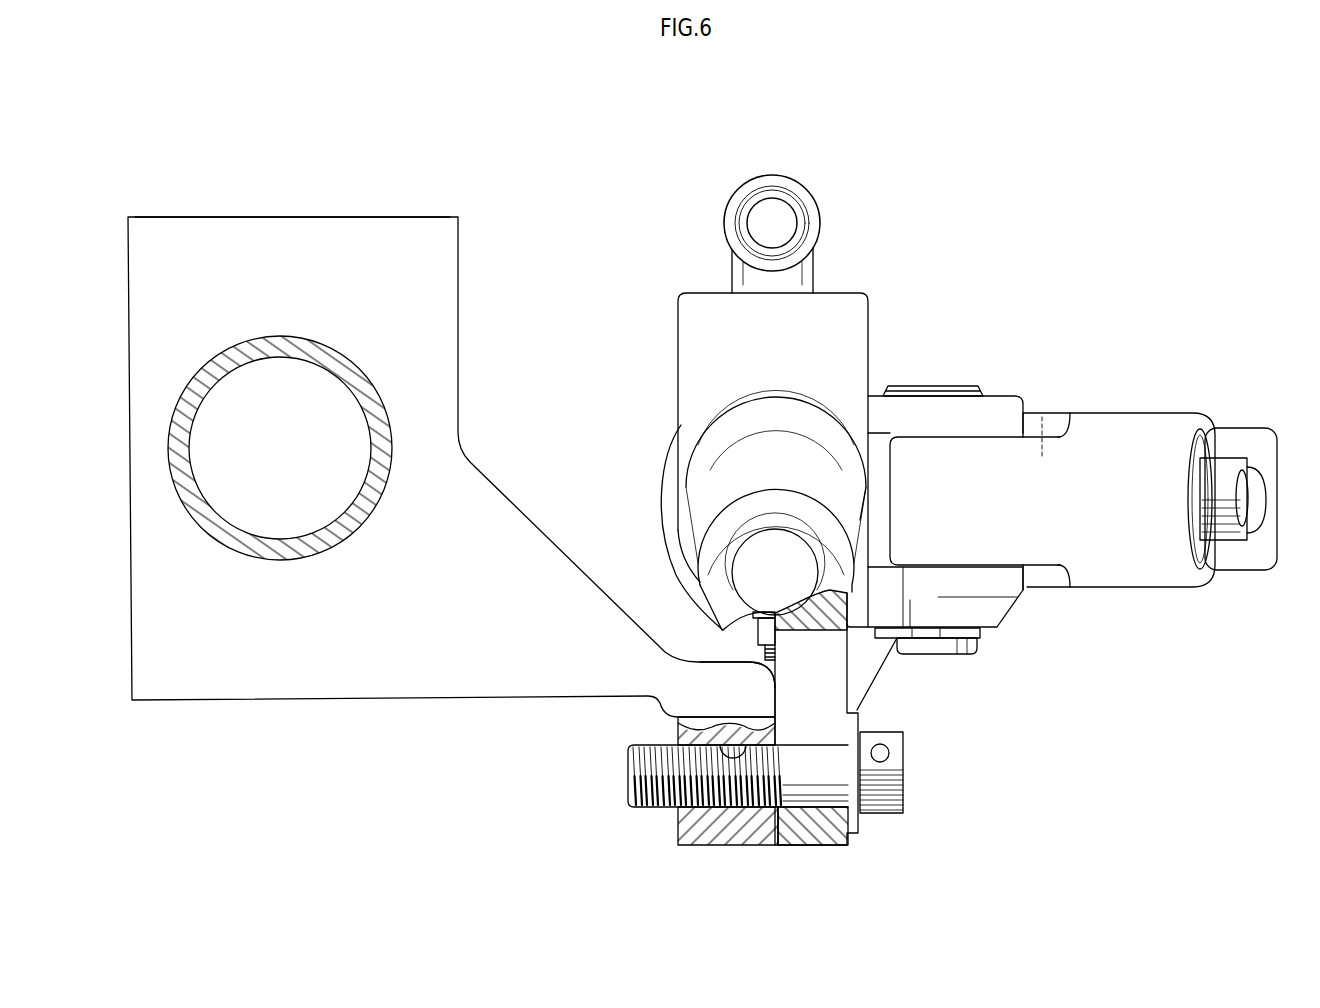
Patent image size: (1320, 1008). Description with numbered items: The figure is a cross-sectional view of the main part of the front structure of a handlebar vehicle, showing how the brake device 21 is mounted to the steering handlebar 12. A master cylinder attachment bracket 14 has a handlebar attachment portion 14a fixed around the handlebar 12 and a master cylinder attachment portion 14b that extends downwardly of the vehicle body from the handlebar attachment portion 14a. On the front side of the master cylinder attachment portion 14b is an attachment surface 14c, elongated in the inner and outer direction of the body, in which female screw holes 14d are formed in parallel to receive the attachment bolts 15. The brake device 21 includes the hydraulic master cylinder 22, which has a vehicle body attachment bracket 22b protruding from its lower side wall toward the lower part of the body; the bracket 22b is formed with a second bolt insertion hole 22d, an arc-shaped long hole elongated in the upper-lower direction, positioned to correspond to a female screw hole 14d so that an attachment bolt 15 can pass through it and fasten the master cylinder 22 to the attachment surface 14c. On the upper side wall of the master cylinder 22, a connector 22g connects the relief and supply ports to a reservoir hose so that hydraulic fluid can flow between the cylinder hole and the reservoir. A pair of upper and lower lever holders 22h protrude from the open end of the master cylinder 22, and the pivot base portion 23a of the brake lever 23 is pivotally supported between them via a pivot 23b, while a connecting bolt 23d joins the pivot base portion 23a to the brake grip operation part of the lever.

The steering handlebar 12 is at (298, 345).
The master cylinder attachment bracket 14 is at (363, 200).
The handlebar attachment portion 14a is at (228, 228).
The master cylinder attachment portion 14b is at (705, 668).
The attachment surface 14c is at (795, 840).
The female screw hole 14d is at (735, 750).
The attachment bolt 15 is at (895, 762).
The brake device 21 is at (873, 313).
The hydraulic master cylinder 22 is at (834, 505).
The vehicle body attachment bracket 22b is at (815, 838).
The second bolt insertion hole 22d is at (828, 667).
The connector 22g is at (780, 190).
The lever holder 22h is at (993, 408).
The brake lever 23 is at (1150, 396).
The pivot base portion 23a is at (1042, 440).
The pivot 23b is at (928, 378).
The connecting bolt 23d is at (1222, 467).